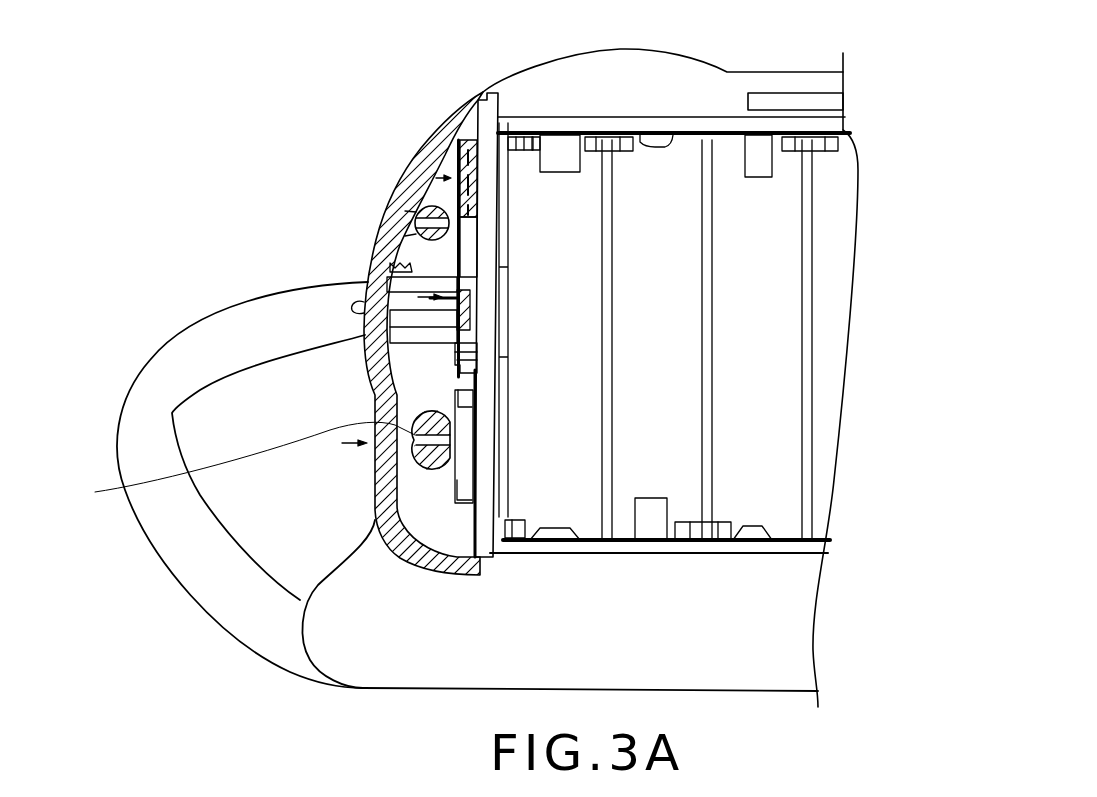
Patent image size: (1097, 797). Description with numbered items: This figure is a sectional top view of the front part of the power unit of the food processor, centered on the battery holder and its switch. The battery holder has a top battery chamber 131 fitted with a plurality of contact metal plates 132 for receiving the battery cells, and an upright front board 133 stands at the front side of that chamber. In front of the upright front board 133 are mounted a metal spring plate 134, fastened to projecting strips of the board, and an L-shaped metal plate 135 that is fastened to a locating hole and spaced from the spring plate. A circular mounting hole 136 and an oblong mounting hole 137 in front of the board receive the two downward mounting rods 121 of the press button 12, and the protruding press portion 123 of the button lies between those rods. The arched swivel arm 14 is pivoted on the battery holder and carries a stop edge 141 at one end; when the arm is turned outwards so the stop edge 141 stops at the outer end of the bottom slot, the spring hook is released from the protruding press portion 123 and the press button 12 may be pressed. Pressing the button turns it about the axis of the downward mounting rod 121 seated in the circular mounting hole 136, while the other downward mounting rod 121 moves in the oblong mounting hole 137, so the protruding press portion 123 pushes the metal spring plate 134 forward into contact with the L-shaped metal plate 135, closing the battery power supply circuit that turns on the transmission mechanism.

The press button 12 is at (383, 220).
The arched swivel arm 14 is at (207, 582).
The downward mounting rod 121 is at (428, 207).
The protruding press portion 123 is at (408, 318).
The top battery chamber 131 is at (680, 167).
The contact metal plate 132 is at (658, 133).
The upright front board 133 is at (490, 100).
The metal spring plate 134 is at (455, 257).
The L-shaped metal plate 135 is at (472, 182).
The circular mounting hole 136 is at (413, 213).
The oblong mounting hole 137 is at (230, 467).
The stop edge 141 is at (390, 268).